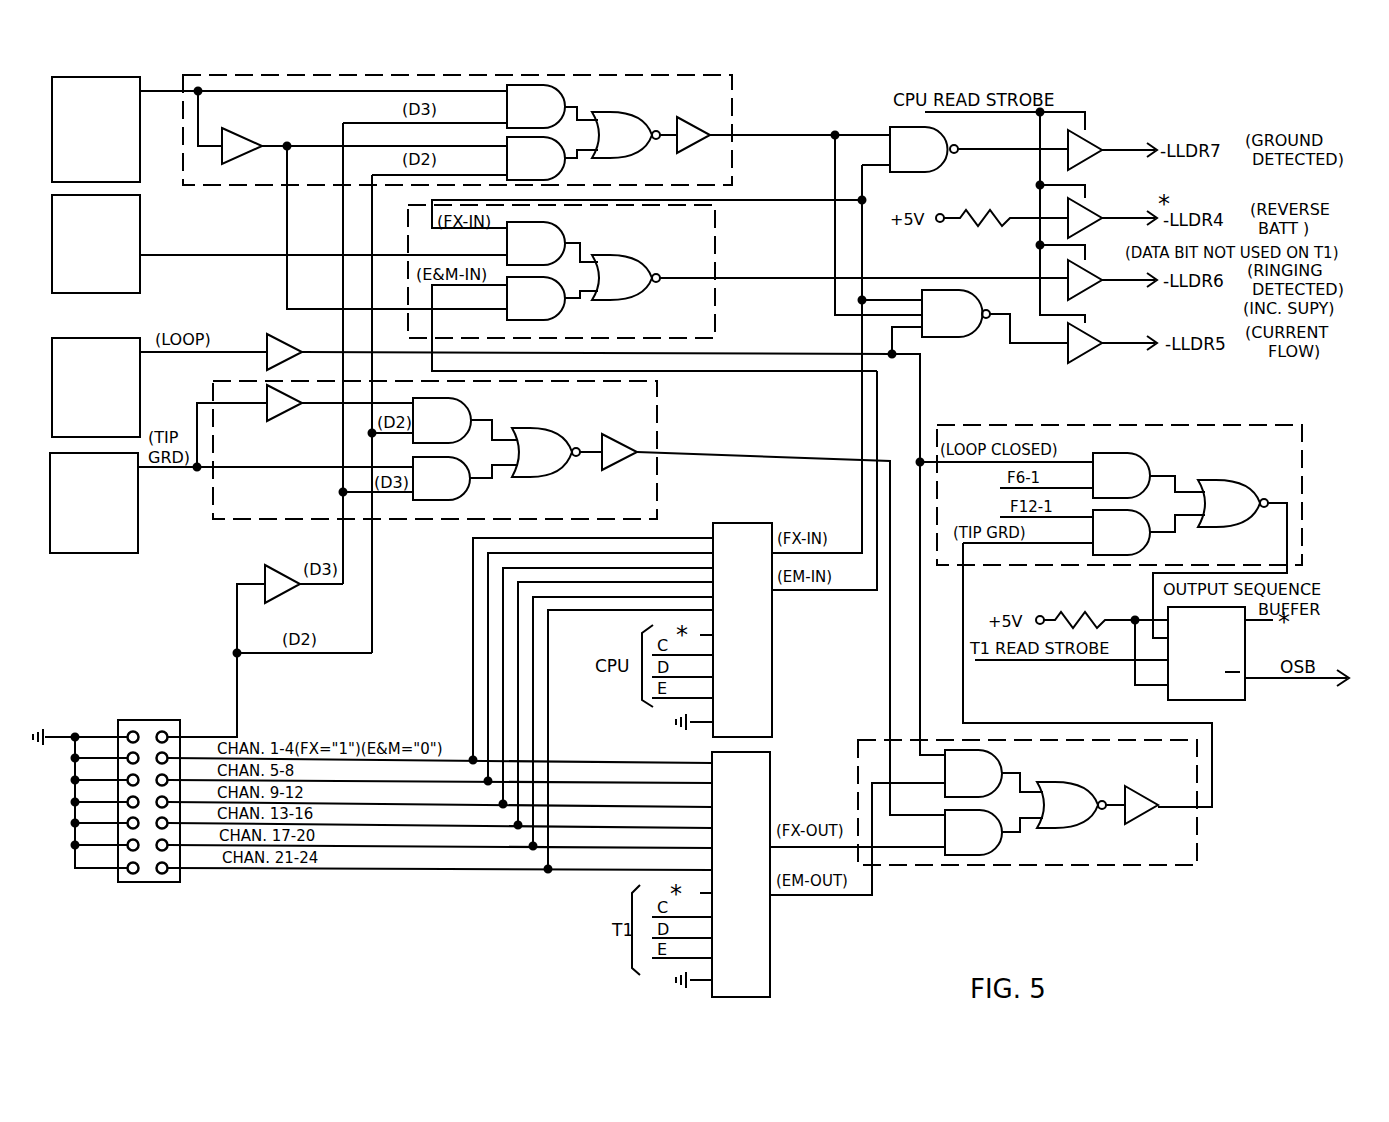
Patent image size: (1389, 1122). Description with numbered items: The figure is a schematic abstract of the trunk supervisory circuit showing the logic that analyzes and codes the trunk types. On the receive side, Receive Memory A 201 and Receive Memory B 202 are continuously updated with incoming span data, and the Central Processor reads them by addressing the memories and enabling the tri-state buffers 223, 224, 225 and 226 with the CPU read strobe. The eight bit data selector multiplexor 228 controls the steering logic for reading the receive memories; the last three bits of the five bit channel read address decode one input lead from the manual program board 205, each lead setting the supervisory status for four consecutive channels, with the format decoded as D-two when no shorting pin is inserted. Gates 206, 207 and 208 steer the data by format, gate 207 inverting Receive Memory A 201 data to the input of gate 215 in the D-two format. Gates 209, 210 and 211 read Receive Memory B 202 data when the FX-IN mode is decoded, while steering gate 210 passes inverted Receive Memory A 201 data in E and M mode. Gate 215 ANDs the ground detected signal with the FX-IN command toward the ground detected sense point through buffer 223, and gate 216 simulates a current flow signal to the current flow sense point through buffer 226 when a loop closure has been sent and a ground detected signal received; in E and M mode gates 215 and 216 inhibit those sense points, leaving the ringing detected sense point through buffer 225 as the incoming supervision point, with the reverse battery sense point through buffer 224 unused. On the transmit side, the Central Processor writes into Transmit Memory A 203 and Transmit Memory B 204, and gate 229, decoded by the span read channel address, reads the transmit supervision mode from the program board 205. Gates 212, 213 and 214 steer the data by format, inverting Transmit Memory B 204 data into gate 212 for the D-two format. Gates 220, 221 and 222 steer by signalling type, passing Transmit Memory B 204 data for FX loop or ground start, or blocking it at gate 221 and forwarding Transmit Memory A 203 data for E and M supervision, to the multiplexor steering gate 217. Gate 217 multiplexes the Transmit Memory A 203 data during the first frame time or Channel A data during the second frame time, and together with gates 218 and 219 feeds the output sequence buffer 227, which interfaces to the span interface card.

The Receive Memory A 201 is at (140, 140).
The Receive Memory B 202 is at (140, 222).
The Transmit Memory A 203 is at (140, 380).
The Transmit Memory B 204 is at (138, 535).
The manual program board 205 is at (140, 718).
The gate 206 is at (566, 89).
The gate 207 is at (562, 172).
The gate 208 is at (626, 158).
The gate 209 is at (560, 226).
The steering gate 210 is at (560, 316).
The gate 211 is at (626, 256).
The gate 212 is at (462, 401).
The gate 213 is at (462, 496).
The gate 214 is at (538, 428).
The gate 215 is at (940, 168).
The gate 216 is at (950, 335).
The multiplexor steering gate 217 is at (1130, 453).
The gate 218 is at (1148, 548).
The gate 219 is at (1218, 478).
The gate 220 is at (998, 754).
The gate 221 is at (998, 850).
The gate 222 is at (1068, 780).
The tri-state buffer 223 is at (1092, 164).
The tri-state buffer 224 is at (1092, 232).
The tri-state buffer 225 is at (1092, 294).
The tri-state buffer 226 is at (1092, 357).
The output sequence buffer 227 is at (1247, 696).
The eight bit data selector multiplexor 228 is at (772, 618).
The gate 229 is at (770, 762).